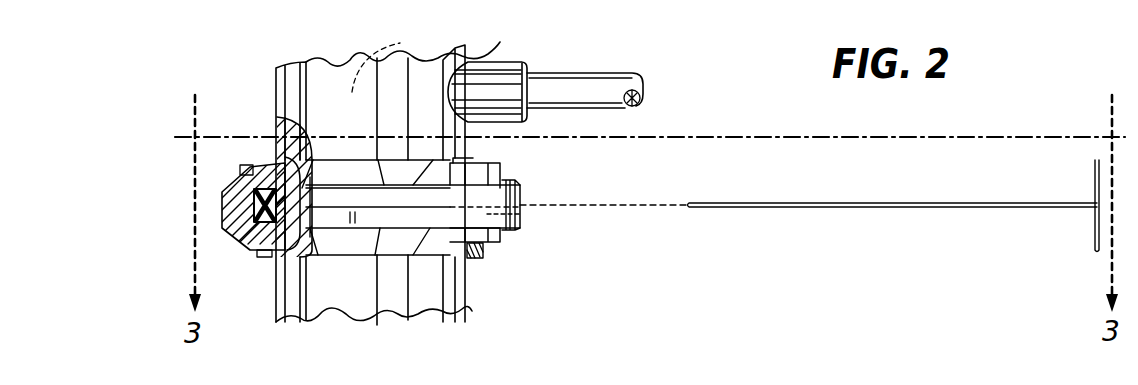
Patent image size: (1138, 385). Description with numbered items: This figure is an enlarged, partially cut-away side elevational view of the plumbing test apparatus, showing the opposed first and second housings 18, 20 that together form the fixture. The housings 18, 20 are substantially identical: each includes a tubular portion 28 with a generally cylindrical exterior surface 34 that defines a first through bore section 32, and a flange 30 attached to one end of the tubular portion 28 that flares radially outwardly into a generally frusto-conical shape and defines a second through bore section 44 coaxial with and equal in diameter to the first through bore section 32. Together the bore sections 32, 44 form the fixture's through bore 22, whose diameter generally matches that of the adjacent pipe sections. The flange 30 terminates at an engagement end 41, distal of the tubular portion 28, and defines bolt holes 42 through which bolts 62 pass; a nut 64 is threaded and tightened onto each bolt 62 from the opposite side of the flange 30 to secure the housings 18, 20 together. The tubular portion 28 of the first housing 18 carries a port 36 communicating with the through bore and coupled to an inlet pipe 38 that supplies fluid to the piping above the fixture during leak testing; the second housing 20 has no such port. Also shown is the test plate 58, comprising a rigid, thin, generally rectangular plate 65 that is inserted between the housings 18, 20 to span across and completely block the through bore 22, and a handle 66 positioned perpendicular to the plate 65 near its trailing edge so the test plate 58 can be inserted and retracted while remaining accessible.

The first housing 18 is at (241, 62).
The second housing 20 is at (473, 300).
The through bore 22 is at (443, 55).
The tubular portion 28 is at (470, 57).
The flange 30 is at (224, 175).
The first through bore section 32 is at (300, 126).
The exterior surface 34 is at (338, 66).
The port 36 is at (532, 64).
The inlet pipe 38 is at (590, 71).
The engagement end 41 is at (219, 205).
The bolt holes 42 is at (521, 214).
The second through bore section 44 is at (276, 150).
The test plate 58 is at (890, 219).
The bolt 62 is at (480, 171).
The nut 64 is at (490, 252).
The plate 65 is at (798, 203).
The handle 66 is at (1096, 192).